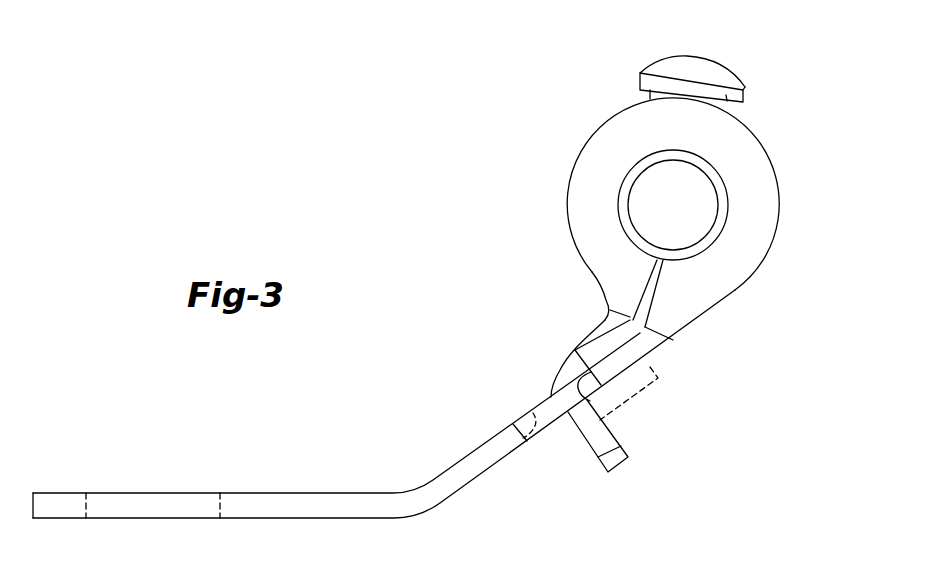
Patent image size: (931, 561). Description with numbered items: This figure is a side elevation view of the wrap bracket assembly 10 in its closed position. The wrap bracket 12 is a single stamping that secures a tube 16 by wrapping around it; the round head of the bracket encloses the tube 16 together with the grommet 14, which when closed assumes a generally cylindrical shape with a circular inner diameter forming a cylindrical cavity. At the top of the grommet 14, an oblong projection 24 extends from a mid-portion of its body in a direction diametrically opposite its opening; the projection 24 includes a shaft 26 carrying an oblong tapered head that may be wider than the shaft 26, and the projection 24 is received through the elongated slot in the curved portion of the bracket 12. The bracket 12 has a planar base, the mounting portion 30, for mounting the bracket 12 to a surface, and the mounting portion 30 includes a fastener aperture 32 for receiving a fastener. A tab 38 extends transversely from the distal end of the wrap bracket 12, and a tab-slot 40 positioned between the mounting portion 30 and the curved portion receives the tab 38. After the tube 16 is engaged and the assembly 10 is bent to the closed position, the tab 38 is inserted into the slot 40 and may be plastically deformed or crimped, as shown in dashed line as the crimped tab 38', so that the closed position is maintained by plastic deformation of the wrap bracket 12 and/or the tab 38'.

The wrap bracket assembly 10 is at (256, 141).
The wrap bracket 12 is at (442, 474).
The grommet 14 is at (580, 179).
The tube 16 is at (717, 201).
The oblong projection 24 is at (666, 66).
The shaft 26 is at (722, 100).
The mounting portion 30 is at (58, 492).
The fastener aperture 32 is at (218, 508).
The tab 38 is at (636, 436).
The crimped tab 38' is at (675, 375).
The tab-slot 40 is at (533, 413).